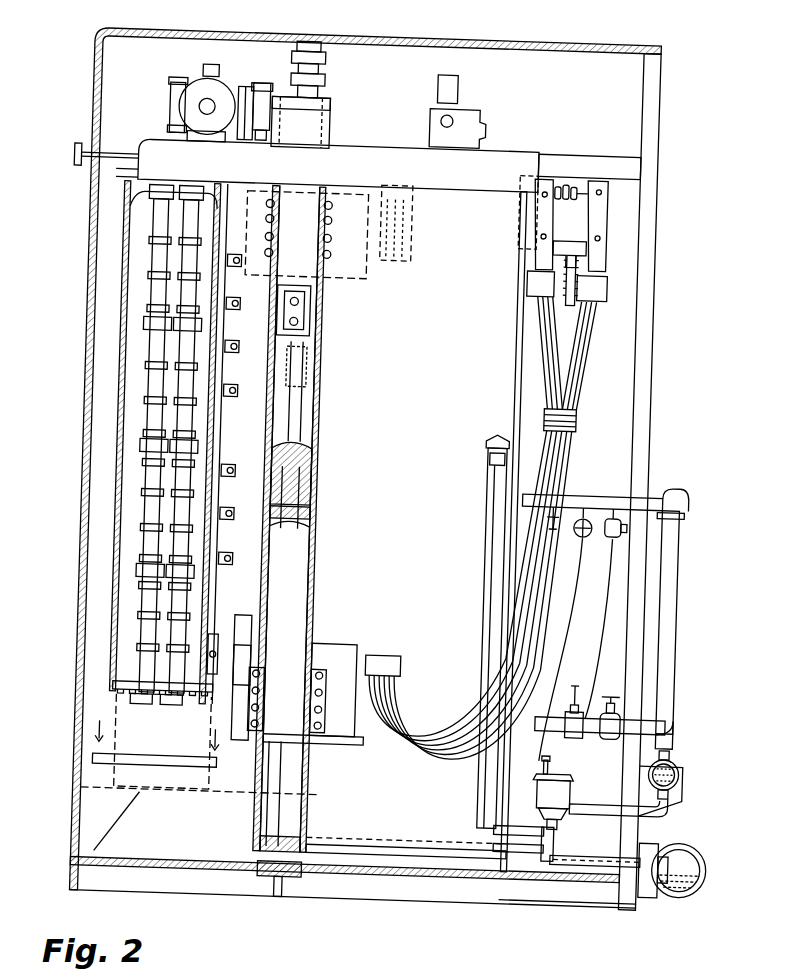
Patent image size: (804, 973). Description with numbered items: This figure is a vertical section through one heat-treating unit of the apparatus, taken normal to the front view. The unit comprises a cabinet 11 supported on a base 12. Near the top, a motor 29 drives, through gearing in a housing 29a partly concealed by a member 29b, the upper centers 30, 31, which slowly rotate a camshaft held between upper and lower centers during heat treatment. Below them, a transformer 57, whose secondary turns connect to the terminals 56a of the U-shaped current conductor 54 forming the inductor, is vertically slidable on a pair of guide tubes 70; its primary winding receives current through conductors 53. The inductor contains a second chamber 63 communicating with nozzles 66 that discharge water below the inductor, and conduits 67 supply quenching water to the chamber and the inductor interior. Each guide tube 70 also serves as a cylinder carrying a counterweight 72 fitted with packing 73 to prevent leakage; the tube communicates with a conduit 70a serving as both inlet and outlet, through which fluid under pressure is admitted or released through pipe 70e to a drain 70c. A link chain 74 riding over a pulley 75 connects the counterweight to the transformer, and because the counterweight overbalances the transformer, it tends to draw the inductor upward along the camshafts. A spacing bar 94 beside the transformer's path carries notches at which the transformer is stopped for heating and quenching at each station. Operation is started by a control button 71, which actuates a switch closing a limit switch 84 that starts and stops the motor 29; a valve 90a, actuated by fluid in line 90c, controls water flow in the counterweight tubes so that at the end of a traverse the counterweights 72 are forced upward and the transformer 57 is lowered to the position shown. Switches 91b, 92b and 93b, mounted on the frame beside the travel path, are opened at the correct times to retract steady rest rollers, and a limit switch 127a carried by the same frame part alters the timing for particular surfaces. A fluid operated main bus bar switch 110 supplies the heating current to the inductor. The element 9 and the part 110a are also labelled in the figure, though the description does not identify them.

The cabinet 11 is at (91, 105).
The base 12 is at (355, 897).
The motor 29 is at (193, 86).
The housing 29a is at (167, 114).
The member 29b is at (156, 148).
The upper center 30 is at (156, 194).
The upper center 31 is at (180, 194).
The conductors 53 is at (458, 700).
The U-shaped current conductor 54 is at (138, 688).
The terminal 56a is at (238, 672).
The transformer 57 is at (342, 648).
The second chamber 63 is at (688, 762).
The nozzles 66 is at (122, 696).
The conduits 67 is at (582, 566).
The guide tubes 70 is at (318, 588).
The conduit 70a is at (340, 846).
The drain 70c is at (716, 854).
The pipe 70e is at (588, 850).
The control button 71 is at (66, 163).
The counterweight 72 is at (277, 410).
The packing 73 is at (318, 515).
The link chain 74 is at (300, 52).
The pulley 75 is at (268, 82).
The limit switch 84 is at (240, 92).
The section line indicator 9 is at (150, 746).
The valve 90a is at (584, 772).
The line 90c is at (551, 756).
The switch 91b is at (242, 470).
The switch 92b is at (242, 516).
The switch 93b is at (244, 563).
The spacing bar 94 is at (217, 654).
The fluid operated main bus bar switch 110 is at (592, 218).
The hose clamp blocks 110a is at (575, 268).
The limit switch 127a is at (240, 352).